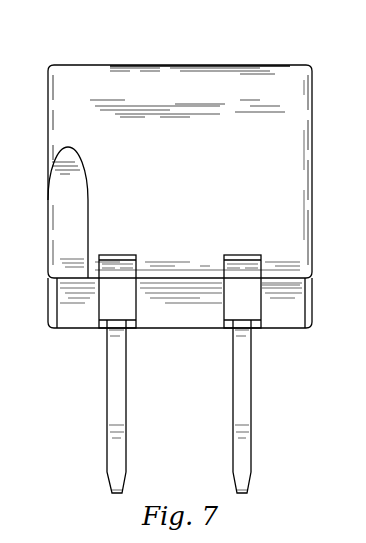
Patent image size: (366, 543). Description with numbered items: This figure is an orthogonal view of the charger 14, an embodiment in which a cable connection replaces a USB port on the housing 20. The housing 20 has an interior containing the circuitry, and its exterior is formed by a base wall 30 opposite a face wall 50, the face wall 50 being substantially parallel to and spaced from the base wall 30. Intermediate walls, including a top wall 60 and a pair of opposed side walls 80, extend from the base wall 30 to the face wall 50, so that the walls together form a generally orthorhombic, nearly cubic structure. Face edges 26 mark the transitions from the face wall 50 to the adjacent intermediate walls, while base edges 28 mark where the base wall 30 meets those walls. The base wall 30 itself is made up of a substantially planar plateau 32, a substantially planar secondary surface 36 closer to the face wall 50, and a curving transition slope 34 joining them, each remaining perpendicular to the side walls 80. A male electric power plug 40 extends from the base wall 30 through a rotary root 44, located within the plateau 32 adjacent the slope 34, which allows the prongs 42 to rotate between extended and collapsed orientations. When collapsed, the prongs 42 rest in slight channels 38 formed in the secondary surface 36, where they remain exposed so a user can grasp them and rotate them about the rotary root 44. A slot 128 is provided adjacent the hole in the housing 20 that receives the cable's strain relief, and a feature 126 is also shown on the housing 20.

The charger 14 is at (125, 50).
The housing 20 is at (40, 180).
The face edges 26 is at (50, 65).
The base edges 28 is at (52, 327).
The base wall 30 is at (165, 330).
The plateau 32 is at (73, 330).
The transition slope 34 is at (70, 310).
The secondary surface 36 is at (281, 282).
The channels 38 is at (137, 268).
The male electric power plug 40 is at (266, 385).
The prongs 42 is at (127, 483).
The rotary root 44 is at (125, 305).
The face wall 50 is at (221, 65).
The top wall 60 is at (203, 153).
The side walls 80 is at (312, 148).
The dome portion 126 is at (72, 175).
The slot 128 is at (68, 222).